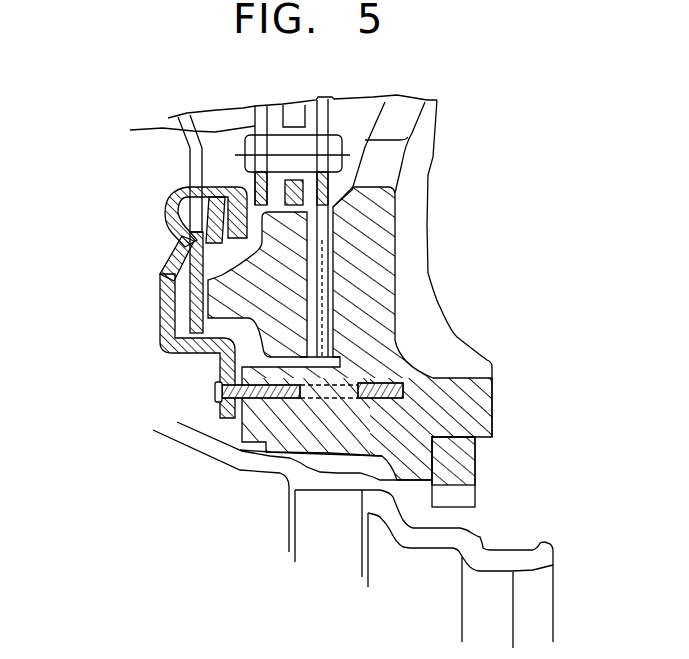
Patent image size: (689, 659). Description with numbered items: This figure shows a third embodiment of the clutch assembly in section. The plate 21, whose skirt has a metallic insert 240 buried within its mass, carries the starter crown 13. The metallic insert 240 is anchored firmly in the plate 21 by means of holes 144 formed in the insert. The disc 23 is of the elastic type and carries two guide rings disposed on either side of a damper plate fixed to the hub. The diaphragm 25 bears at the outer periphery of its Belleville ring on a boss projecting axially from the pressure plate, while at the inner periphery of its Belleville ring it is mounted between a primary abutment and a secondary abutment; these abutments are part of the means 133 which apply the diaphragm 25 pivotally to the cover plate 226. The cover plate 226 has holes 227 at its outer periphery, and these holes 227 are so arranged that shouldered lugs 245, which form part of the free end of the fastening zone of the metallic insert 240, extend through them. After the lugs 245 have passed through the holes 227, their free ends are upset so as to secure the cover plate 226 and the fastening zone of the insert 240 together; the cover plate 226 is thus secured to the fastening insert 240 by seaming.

The starter crown 13 is at (477, 459).
The plate 21 is at (493, 410).
The disc 23 is at (175, 122).
The diaphragm 25 is at (160, 277).
The means for applying the diaphragm pivotally to the cover plate 133 is at (165, 200).
The holes 144 is at (310, 410).
The cover plate 226 is at (163, 322).
The holes 227 is at (212, 386).
The metallic insert 240 is at (312, 428).
The shouldered lugs 245 is at (217, 381).